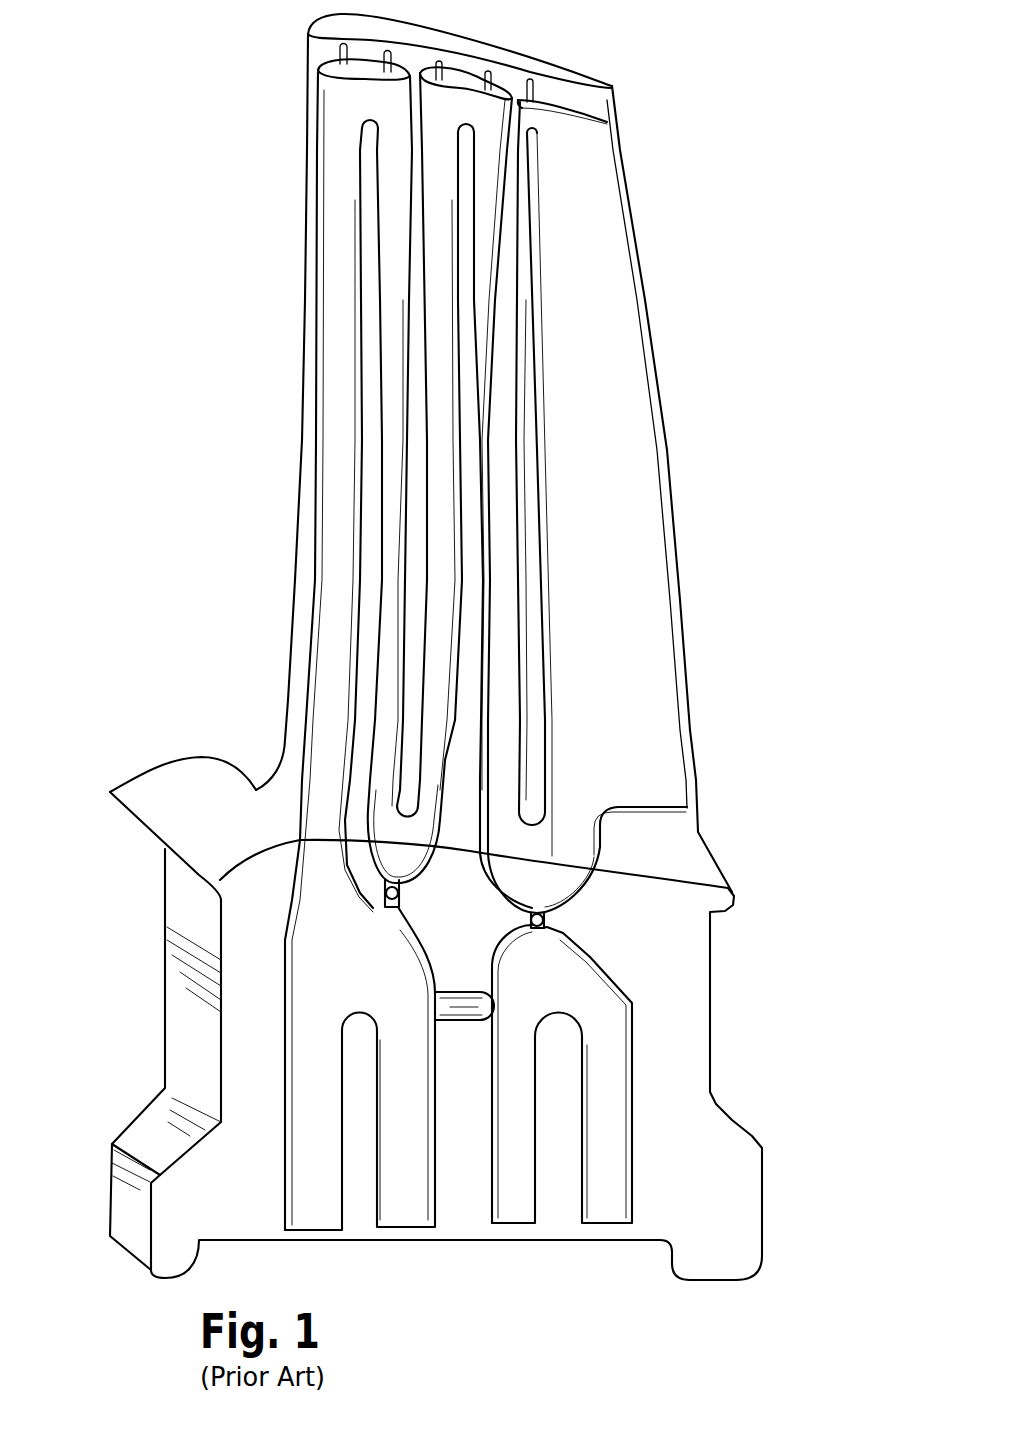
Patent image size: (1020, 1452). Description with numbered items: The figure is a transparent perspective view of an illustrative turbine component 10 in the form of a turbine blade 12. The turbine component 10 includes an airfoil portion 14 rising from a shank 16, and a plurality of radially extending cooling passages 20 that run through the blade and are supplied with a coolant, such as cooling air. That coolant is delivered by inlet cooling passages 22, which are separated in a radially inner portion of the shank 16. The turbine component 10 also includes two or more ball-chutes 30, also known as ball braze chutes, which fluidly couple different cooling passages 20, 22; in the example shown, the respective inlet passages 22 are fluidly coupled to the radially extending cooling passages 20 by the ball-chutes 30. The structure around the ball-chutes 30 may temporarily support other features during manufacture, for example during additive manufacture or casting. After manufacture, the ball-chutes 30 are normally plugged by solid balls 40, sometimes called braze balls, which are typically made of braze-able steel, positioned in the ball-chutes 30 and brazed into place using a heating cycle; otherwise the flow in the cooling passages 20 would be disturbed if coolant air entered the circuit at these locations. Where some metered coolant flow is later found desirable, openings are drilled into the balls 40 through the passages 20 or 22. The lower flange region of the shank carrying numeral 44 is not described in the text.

The turbine component 10 is at (637, 93).
The turbine blade 12 is at (400, 669).
The airfoil portion 14 is at (301, 437).
The shank 16 is at (186, 1057).
The radially extending cooling passages 20 is at (388, 667).
The inlet cooling passages 22 is at (408, 1207).
The ball-chutes 30 is at (402, 906).
The balls 40 is at (391, 908).
The dovetail 44 is at (115, 1177).